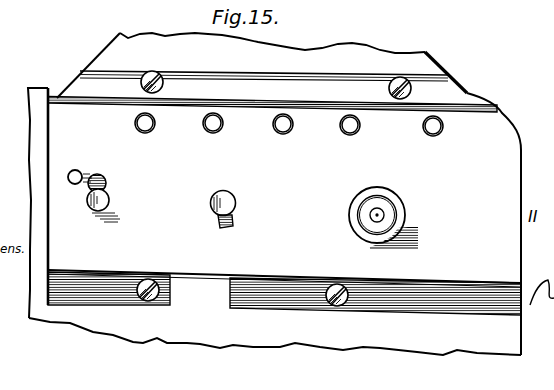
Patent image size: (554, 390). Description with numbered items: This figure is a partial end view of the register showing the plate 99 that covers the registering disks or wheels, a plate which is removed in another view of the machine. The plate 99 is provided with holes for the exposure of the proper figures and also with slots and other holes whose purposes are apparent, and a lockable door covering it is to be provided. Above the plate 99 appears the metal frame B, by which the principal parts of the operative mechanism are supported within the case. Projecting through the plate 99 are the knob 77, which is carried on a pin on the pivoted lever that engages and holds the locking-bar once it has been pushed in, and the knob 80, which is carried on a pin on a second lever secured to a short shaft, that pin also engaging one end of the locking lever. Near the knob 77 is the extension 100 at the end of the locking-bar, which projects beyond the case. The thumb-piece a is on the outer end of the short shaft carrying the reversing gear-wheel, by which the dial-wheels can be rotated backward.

The metal frame B is at (190, 63).
The plate 99 is at (274, 213).
The extension 100 is at (80, 165).
The knob 77 is at (109, 200).
The knob 80 is at (237, 210).
The thumb-piece a is at (362, 227).